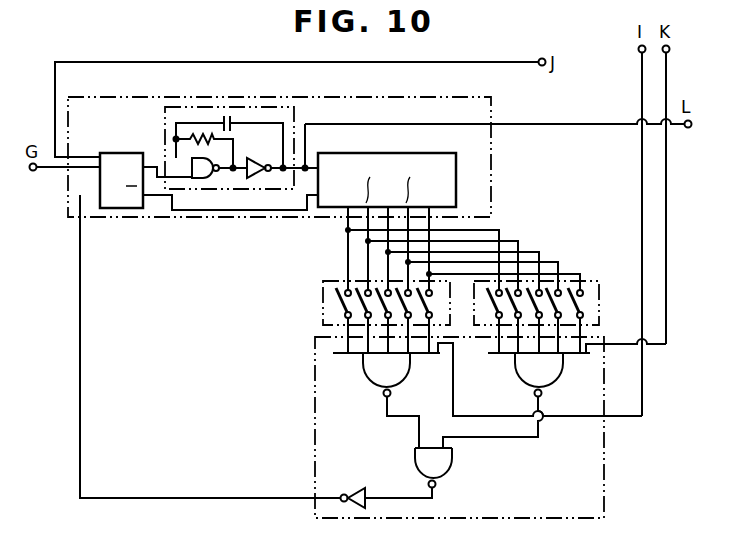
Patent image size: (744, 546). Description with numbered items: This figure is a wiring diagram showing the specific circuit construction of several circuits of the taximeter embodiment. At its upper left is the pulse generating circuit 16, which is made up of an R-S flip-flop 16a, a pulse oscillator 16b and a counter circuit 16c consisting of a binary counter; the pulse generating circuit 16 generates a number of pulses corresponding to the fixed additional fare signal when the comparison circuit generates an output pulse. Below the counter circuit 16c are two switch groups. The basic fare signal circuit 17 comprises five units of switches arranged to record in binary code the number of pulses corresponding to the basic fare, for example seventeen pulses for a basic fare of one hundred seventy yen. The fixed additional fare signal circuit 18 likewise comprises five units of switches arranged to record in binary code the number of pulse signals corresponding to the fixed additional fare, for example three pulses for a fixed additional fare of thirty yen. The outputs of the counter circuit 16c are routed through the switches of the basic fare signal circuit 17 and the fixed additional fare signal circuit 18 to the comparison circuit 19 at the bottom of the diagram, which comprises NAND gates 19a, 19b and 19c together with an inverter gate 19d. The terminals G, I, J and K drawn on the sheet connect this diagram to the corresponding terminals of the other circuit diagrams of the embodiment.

The pulse generating circuit 16 is at (125, 97).
The R-S flip-flop 16a is at (125, 153).
The pulse oscillator 16b is at (215, 107).
The counter circuit 16c is at (433, 153).
The basic fare signal circuit 17 is at (323, 283).
The fixed additional fare signal circuit 18 is at (599, 295).
The comparison circuit 19 is at (315, 441).
The NAND gate 19a is at (410, 372).
The NAND gate 19b is at (515, 372).
The NAND gate 19c is at (452, 463).
The inverter gate 19d is at (362, 489).